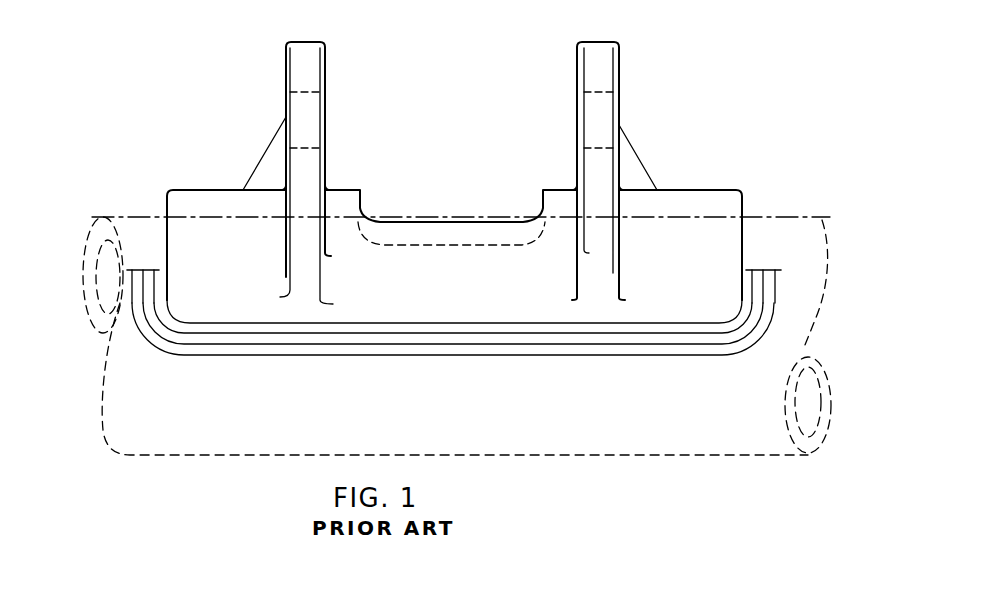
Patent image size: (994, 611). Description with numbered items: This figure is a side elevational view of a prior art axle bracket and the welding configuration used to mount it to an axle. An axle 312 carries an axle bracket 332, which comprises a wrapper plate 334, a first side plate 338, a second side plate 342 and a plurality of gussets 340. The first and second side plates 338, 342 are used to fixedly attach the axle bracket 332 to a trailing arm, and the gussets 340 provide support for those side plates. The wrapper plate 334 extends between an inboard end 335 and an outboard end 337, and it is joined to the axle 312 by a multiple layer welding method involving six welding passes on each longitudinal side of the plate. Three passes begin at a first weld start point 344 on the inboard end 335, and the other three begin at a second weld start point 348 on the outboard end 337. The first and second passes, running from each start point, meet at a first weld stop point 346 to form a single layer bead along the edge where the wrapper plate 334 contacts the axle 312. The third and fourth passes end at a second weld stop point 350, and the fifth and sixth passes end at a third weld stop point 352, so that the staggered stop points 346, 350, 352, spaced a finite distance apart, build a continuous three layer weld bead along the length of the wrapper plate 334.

The axle 312 is at (797, 364).
The axle bracket 332 is at (747, 172).
The wrapper plate 334 is at (703, 190).
The inboard end 335 is at (743, 238).
The outboard end 337 is at (164, 224).
The first side plate 338 is at (598, 70).
The gussets 340 is at (280, 145).
The second side plate 342 is at (313, 73).
The first weld start point 344 is at (768, 259).
The first weld stop point 346 is at (495, 322).
The second weld start point 348 is at (145, 263).
The second weld stop point 350 is at (389, 322).
The third weld stop point 352 is at (443, 322).